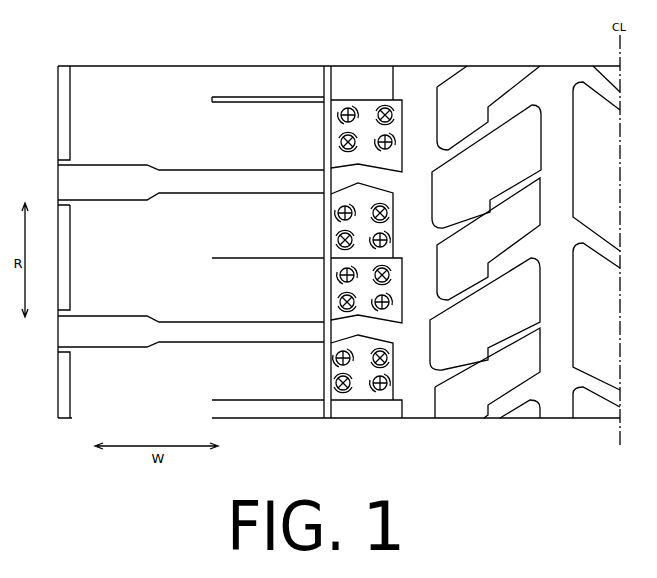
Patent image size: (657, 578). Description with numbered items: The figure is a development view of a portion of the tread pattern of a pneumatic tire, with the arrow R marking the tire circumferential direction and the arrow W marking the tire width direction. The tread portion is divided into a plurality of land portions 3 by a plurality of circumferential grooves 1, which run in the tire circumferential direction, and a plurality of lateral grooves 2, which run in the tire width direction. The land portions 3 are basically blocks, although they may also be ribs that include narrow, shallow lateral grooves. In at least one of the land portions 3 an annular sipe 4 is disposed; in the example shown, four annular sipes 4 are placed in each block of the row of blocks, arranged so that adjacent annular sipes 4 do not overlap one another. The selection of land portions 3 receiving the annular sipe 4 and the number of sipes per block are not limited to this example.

The circumferential groove 1 is at (60, 66).
The lateral groove 2 is at (165, 173).
The land portion 3 is at (386, 106).
The annular sipe 4 is at (383, 106).